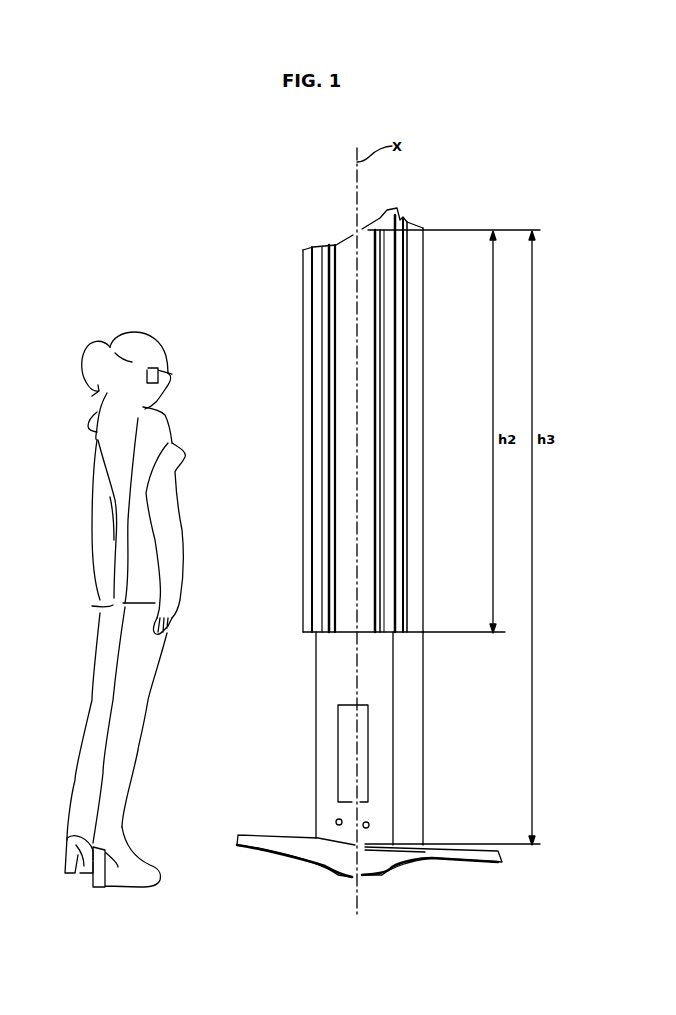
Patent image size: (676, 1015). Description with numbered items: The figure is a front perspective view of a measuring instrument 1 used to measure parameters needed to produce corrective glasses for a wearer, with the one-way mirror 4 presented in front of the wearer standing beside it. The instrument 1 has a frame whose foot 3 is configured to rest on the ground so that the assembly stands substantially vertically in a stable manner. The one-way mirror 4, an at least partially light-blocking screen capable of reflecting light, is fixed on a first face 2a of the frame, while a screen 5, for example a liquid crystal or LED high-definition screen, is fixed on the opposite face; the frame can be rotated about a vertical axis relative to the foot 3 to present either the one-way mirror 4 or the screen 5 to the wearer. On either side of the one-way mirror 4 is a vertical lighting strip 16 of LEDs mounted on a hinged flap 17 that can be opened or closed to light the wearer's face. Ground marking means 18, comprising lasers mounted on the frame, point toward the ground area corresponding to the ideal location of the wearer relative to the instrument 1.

The measuring instrument 1 is at (214, 312).
The first face 2a is at (334, 754).
The foot 3 is at (278, 832).
The one-way mirror 4 is at (365, 420).
The screen 5 is at (426, 477).
The vertical lighting strip 16 is at (320, 292).
The flap 17 is at (302, 345).
The ground marking means 18 is at (363, 823).